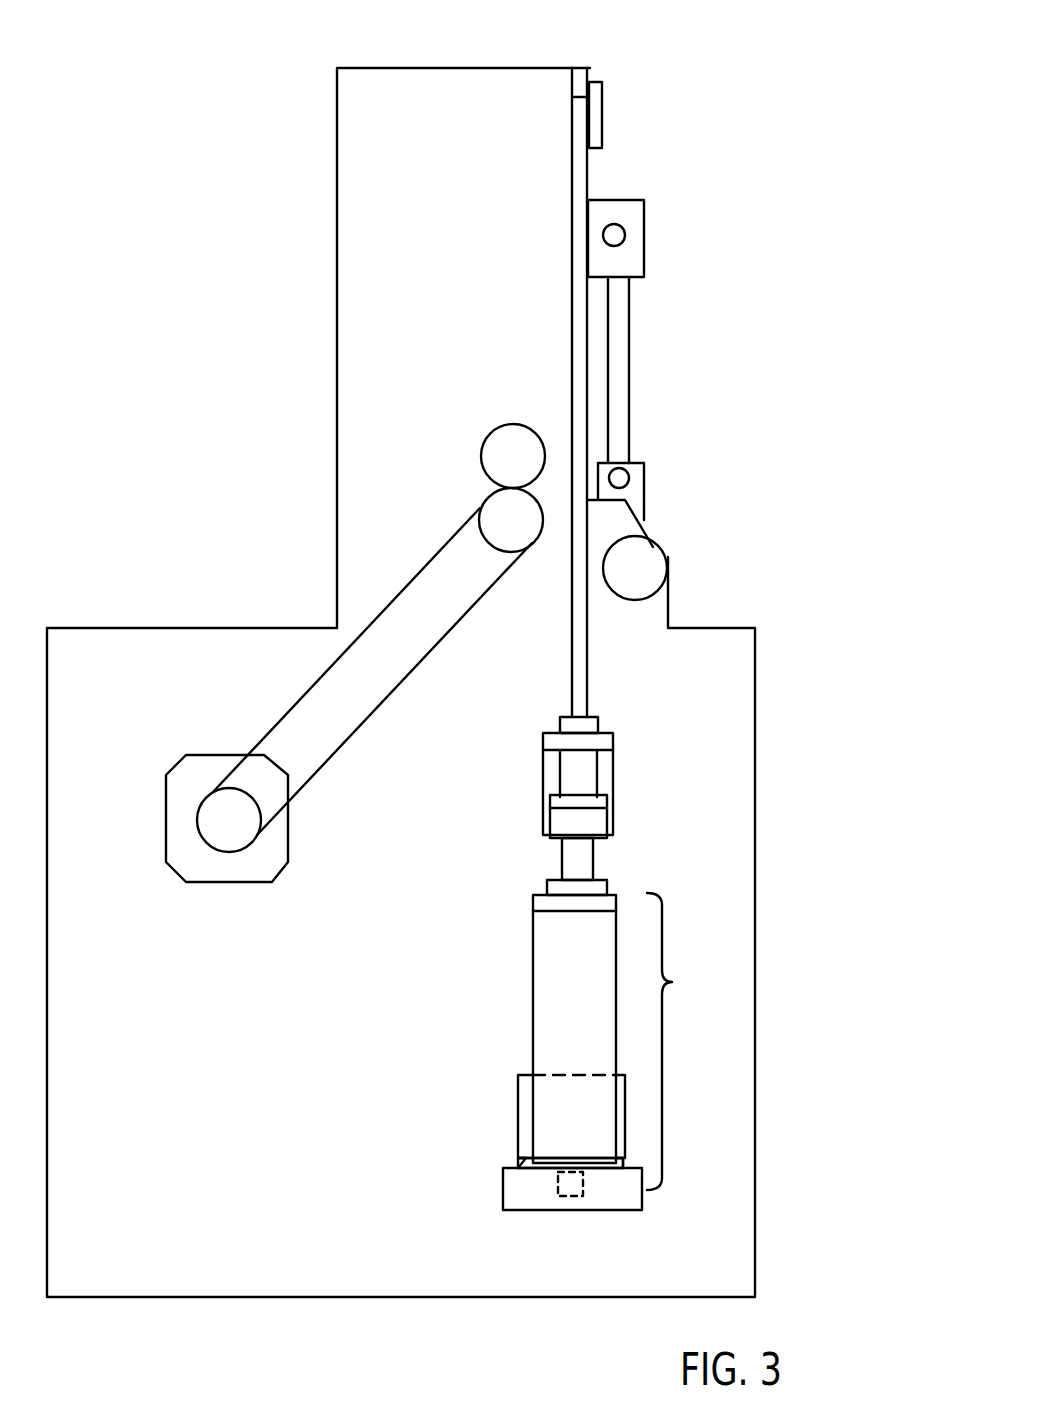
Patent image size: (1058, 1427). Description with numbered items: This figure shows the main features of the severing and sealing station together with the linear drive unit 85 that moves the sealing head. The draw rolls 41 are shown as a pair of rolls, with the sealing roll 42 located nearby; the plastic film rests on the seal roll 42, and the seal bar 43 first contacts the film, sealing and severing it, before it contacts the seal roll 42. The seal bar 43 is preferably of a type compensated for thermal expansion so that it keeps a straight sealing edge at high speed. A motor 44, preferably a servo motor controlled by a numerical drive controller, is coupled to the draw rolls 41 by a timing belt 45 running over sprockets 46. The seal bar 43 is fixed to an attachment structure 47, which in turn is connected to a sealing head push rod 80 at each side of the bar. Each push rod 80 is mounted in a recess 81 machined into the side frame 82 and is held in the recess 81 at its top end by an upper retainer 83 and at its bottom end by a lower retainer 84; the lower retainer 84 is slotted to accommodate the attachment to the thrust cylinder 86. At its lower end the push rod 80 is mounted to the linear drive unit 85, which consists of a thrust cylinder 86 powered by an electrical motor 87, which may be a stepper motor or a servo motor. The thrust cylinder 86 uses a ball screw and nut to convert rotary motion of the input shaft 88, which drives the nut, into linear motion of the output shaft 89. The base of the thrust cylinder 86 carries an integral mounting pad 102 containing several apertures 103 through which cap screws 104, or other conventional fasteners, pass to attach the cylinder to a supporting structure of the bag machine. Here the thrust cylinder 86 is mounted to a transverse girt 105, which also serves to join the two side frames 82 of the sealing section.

The draw rolls 41 is at (493, 448).
The sealing roll 42 is at (642, 560).
The seal bar 43 is at (634, 473).
The motor 44 is at (187, 872).
The timing belt 45 is at (380, 708).
The sprockets 46 is at (534, 545).
The attachment structure 47 is at (633, 233).
The sealing head push rod 80 is at (588, 173).
The recess 81 is at (578, 75).
The side frame 82 is at (463, 202).
The upper retainer 83 is at (602, 130).
The lower retainer 84 is at (613, 762).
The linear drive unit 85 is at (687, 1041).
The thrust cylinder 86 is at (547, 983).
The motor 87 is at (518, 1110).
The input shaft 88 is at (570, 1178).
The output shaft 89 is at (593, 860).
The mounting pad 102 is at (623, 1162).
The apertures 103 is at (623, 1158).
The cap screws 104 is at (520, 1160).
The transverse girt 105 is at (627, 1202).